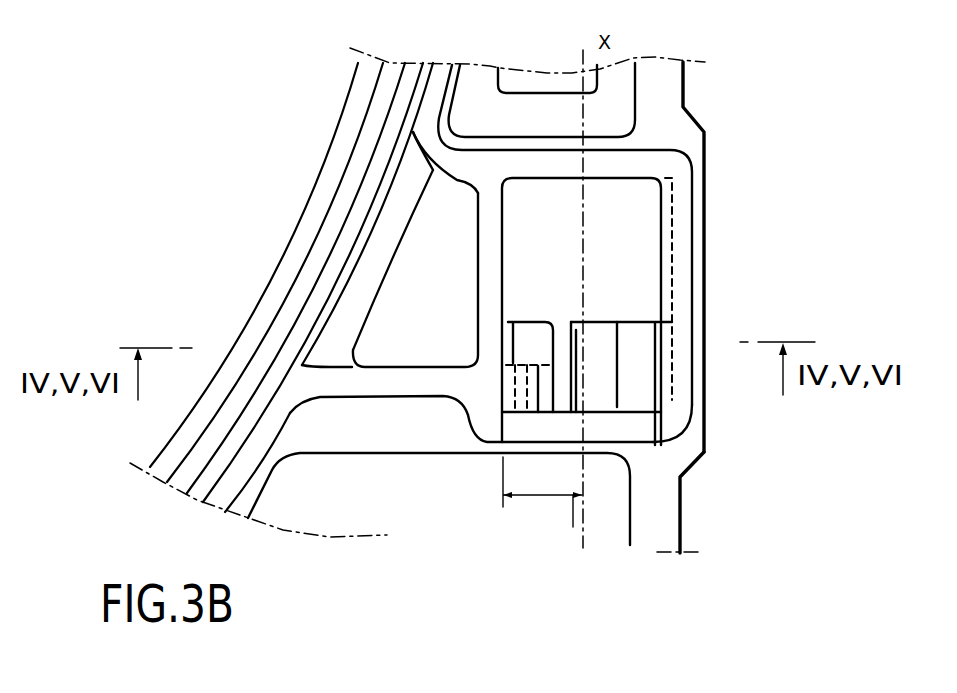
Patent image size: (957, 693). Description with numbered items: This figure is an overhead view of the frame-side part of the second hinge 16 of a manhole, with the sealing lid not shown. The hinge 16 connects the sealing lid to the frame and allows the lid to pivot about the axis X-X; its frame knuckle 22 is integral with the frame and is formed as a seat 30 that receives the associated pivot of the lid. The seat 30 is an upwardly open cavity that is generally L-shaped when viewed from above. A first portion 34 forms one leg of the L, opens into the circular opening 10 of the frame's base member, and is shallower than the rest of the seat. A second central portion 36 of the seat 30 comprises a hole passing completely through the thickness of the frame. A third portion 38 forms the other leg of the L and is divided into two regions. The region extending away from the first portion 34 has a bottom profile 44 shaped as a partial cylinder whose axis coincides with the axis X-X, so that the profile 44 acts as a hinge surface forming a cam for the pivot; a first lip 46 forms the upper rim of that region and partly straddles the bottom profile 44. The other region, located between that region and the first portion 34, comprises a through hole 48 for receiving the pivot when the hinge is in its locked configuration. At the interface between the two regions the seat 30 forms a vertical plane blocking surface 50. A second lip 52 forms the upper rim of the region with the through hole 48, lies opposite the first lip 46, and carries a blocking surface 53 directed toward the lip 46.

The circular opening 10 is at (203, 221).
The second hinge 16 is at (775, 266).
The frame knuckle 22 is at (738, 476).
The seat 30 is at (638, 236).
The first portion 34 is at (410, 320).
The second central portion 36 is at (648, 212).
The third portion 38 is at (581, 459).
The bottom profile 44 is at (602, 351).
The first lip 46 is at (637, 388).
The through hole 48 is at (564, 333).
The plane blocking surface 50 is at (577, 318).
The second lip 52 is at (532, 337).
The blocking surface 53 is at (553, 388).